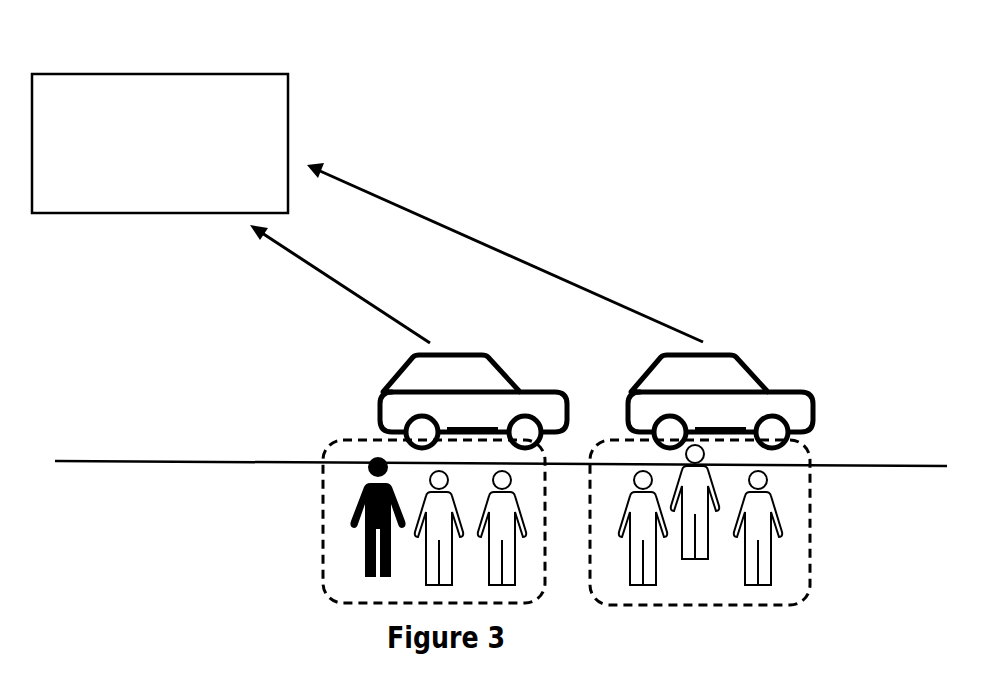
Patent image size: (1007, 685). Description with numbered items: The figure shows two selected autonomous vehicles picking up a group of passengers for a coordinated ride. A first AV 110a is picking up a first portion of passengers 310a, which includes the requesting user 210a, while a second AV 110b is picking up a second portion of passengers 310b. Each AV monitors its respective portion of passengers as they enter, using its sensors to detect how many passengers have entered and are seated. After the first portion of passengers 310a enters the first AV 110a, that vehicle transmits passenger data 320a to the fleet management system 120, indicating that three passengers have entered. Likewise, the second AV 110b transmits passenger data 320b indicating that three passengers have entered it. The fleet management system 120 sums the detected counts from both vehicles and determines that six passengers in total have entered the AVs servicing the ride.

The fleet management system 120 is at (141, 186).
The first AV 110a is at (447, 420).
The second AV 110b is at (695, 420).
The first portion of passengers 310a is at (308, 473).
The second portion of passengers 310b is at (817, 525).
The requesting user 210a is at (352, 517).
The passenger data 320a is at (326, 284).
The passenger data 320b is at (505, 252).